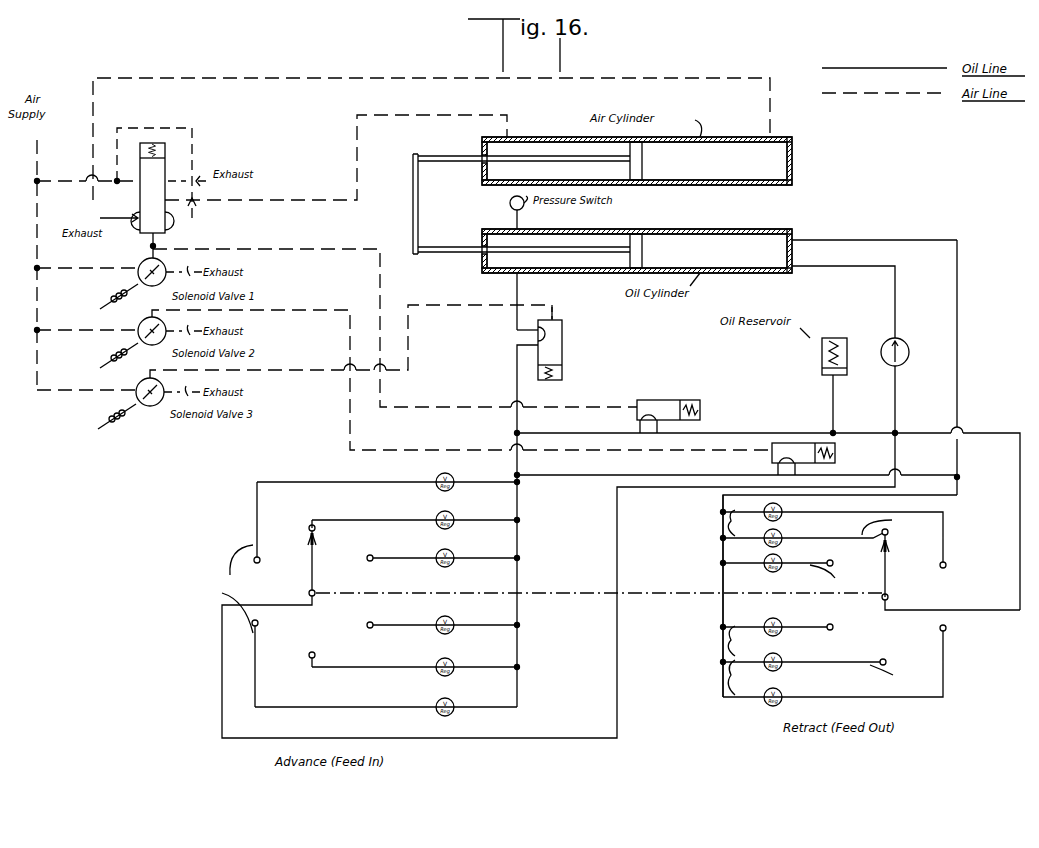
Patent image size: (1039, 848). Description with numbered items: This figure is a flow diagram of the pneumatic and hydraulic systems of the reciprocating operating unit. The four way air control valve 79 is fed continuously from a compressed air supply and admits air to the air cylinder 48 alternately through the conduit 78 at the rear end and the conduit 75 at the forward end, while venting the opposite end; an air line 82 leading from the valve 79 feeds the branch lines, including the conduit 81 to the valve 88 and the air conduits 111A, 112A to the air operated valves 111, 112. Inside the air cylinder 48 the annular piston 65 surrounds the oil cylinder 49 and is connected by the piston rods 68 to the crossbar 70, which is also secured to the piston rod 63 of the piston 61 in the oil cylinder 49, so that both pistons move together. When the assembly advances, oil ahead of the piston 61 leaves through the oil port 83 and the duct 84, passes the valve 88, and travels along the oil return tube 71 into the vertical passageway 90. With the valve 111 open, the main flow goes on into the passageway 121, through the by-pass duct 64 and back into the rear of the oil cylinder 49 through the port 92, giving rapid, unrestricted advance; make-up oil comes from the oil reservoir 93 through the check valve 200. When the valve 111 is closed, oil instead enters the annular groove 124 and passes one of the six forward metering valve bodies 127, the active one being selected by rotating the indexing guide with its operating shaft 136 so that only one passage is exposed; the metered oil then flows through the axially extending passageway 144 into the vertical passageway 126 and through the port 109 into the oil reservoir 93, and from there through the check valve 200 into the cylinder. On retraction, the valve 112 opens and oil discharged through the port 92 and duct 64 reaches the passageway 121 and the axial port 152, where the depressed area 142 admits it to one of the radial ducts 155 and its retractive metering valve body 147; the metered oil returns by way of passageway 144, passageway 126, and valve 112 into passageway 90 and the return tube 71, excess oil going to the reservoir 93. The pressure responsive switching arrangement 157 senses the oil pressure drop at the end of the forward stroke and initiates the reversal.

The conduit 78 is at (268, 80).
The four way air control valve 79 is at (165, 163).
The conduit 75 is at (278, 202).
The air line junction 82 is at (150, 241).
The air conduit 112A is at (312, 240).
The air conduit 111A is at (270, 310).
The conduit 81 is at (245, 372).
The air cylinder 48 is at (555, 137).
The annular piston 65 is at (642, 170).
The piston rods 68 is at (456, 158).
The crossbar 70 is at (413, 216).
The oil cylinder 49 is at (622, 229).
The piston 61 is at (642, 242).
The piston rod 63 is at (442, 248).
The pressure responsive switching arrangement 157 is at (510, 205).
The port 92 is at (792, 240).
The by-pass duct 64 is at (958, 290).
The check valve 200 is at (910, 352).
The oil reservoir 93 is at (822, 358).
The port 109 is at (833, 380).
The vertical passageway 126 is at (782, 432).
The air operated valve 112 is at (668, 400).
The air operated valve 111 is at (800, 440).
The valve 88 is at (562, 350).
The duct 84 is at (515, 325).
The oil port 83 is at (522, 275).
The oil return tube 71 is at (515, 373).
The vertical passageway 90 is at (586, 474).
The vertical passageway 121 is at (868, 469).
The axial port 152 is at (960, 491).
The axially extending passageway 144 is at (617, 570).
The annular groove 124 is at (518, 645).
The valve bodies 127 is at (437, 514).
The operating shaft 136 is at (362, 592).
The depressed area 142 is at (722, 616).
The valve bodies 147 is at (786, 514).
The radial ducts 155 is at (733, 517).